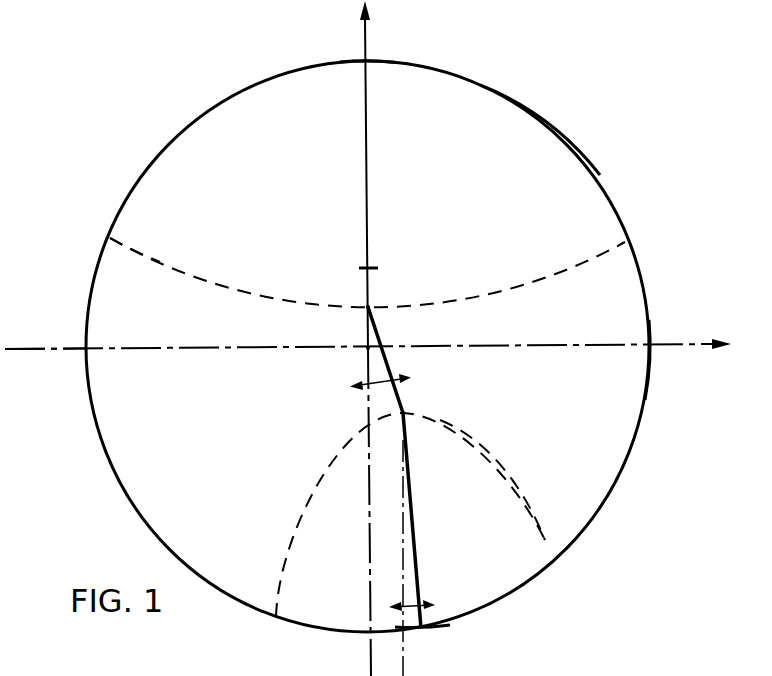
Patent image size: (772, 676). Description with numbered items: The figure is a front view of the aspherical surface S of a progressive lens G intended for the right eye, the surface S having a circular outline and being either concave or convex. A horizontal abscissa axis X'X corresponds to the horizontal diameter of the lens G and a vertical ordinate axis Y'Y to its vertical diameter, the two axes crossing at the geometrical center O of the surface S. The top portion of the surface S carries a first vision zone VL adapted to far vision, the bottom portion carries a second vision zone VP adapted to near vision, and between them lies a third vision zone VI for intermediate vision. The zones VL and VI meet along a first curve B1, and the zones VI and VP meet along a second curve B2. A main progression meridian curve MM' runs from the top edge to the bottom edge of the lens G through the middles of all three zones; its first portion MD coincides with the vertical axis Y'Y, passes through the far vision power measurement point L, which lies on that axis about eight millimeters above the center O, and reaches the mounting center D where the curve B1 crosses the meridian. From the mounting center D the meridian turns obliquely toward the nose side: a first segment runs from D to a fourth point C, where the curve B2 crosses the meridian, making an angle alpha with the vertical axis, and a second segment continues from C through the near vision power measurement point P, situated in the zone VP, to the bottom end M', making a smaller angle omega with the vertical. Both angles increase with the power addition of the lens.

The aspherical surface S is at (124, 456).
The abscissa axis X is at (368, 363).
The abscissa axis X' is at (45, 371).
The ordinate axis Y is at (356, 174).
The ordinate axis Y' is at (355, 512).
The first curve B1 is at (625, 242).
The second curve B2 is at (547, 541).
The lens G is at (117, 200).
The second vision zone VP is at (514, 566).
The near vision power measurement point P is at (412, 492).
The top end of main meridian curve M is at (381, 44).
The first vision zone VL is at (541, 150).
The third vision zone VI is at (636, 380).
The far vision power measurement point L is at (372, 268).
The mounting center D is at (372, 306).
The geometrical center O is at (366, 347).
The fourth predetermined point C is at (406, 413).
The bottom end of main meridian curve M' is at (426, 646).